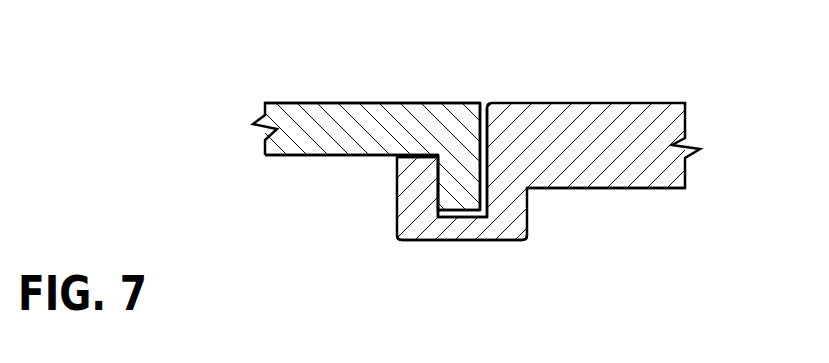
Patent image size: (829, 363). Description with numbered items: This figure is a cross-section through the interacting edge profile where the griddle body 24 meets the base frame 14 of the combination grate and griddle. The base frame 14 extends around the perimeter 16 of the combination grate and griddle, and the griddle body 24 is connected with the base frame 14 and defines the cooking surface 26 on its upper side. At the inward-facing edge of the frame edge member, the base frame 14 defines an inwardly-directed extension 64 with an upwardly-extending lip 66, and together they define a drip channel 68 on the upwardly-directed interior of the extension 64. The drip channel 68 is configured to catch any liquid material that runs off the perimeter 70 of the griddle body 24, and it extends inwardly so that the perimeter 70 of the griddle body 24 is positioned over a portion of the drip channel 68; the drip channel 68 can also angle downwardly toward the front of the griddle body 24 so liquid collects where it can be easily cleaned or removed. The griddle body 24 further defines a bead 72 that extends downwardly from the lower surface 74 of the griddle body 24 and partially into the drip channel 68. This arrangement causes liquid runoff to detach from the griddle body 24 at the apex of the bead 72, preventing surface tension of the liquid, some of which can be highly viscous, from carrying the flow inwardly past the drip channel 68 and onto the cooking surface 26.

The base frame 14 is at (625, 142).
The perimeter 16 is at (487, 135).
The griddle body 24 is at (328, 130).
The cooking surface 26 is at (288, 103).
The inwardly-directed extension 64 is at (462, 230).
The upwardly-extending lip 66 is at (415, 182).
The drip channel 68 is at (463, 202).
The perimeter of the griddle body 70 is at (487, 160).
The bead 72 is at (453, 183).
The lower surface of the griddle body 74 is at (312, 156).